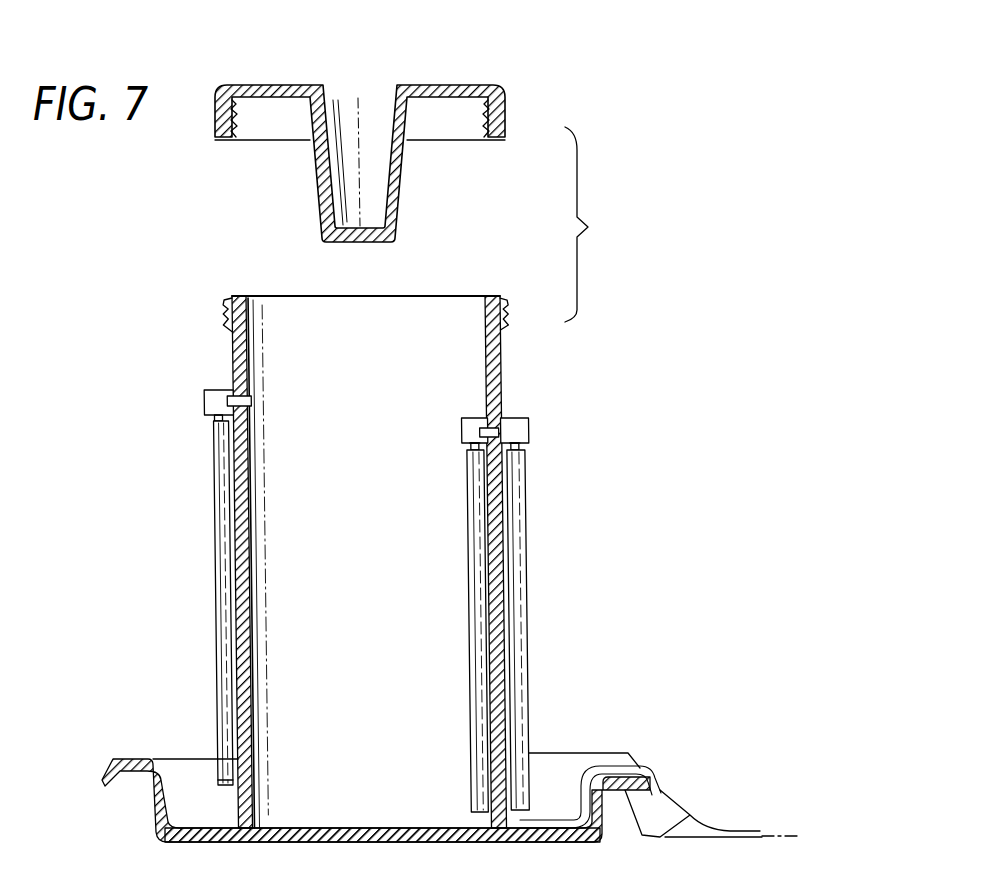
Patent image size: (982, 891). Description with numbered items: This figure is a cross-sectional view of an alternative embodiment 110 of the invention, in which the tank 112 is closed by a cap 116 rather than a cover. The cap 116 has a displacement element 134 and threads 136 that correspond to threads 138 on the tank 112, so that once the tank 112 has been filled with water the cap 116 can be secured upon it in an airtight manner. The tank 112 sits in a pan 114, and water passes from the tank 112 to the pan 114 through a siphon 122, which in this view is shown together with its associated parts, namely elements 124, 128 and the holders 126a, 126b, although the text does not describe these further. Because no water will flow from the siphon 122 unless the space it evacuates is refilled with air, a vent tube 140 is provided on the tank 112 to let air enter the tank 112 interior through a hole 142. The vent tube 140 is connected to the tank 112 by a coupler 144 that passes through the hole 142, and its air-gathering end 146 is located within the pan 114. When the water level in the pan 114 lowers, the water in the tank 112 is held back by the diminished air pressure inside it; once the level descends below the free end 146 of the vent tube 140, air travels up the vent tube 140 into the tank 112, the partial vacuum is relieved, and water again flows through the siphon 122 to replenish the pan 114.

The alternative embodiment 110 is at (597, 331).
The tank 112 is at (228, 362).
The pan 114 is at (605, 756).
The cap 116 is at (507, 120).
The siphon 122 is at (575, 434).
The first electrode 124 is at (465, 488).
The first electrode holder 126a is at (460, 430).
The second electrode holder 126b is at (528, 430).
The second electrode 128 is at (524, 490).
The displacement element 134 is at (368, 100).
The threads 136 is at (238, 128).
The threads 138 is at (228, 302).
The vent tube 140 is at (212, 490).
The hole 142 is at (246, 400).
The coupler 144 is at (203, 400).
The air-gathering end 146 is at (210, 783).